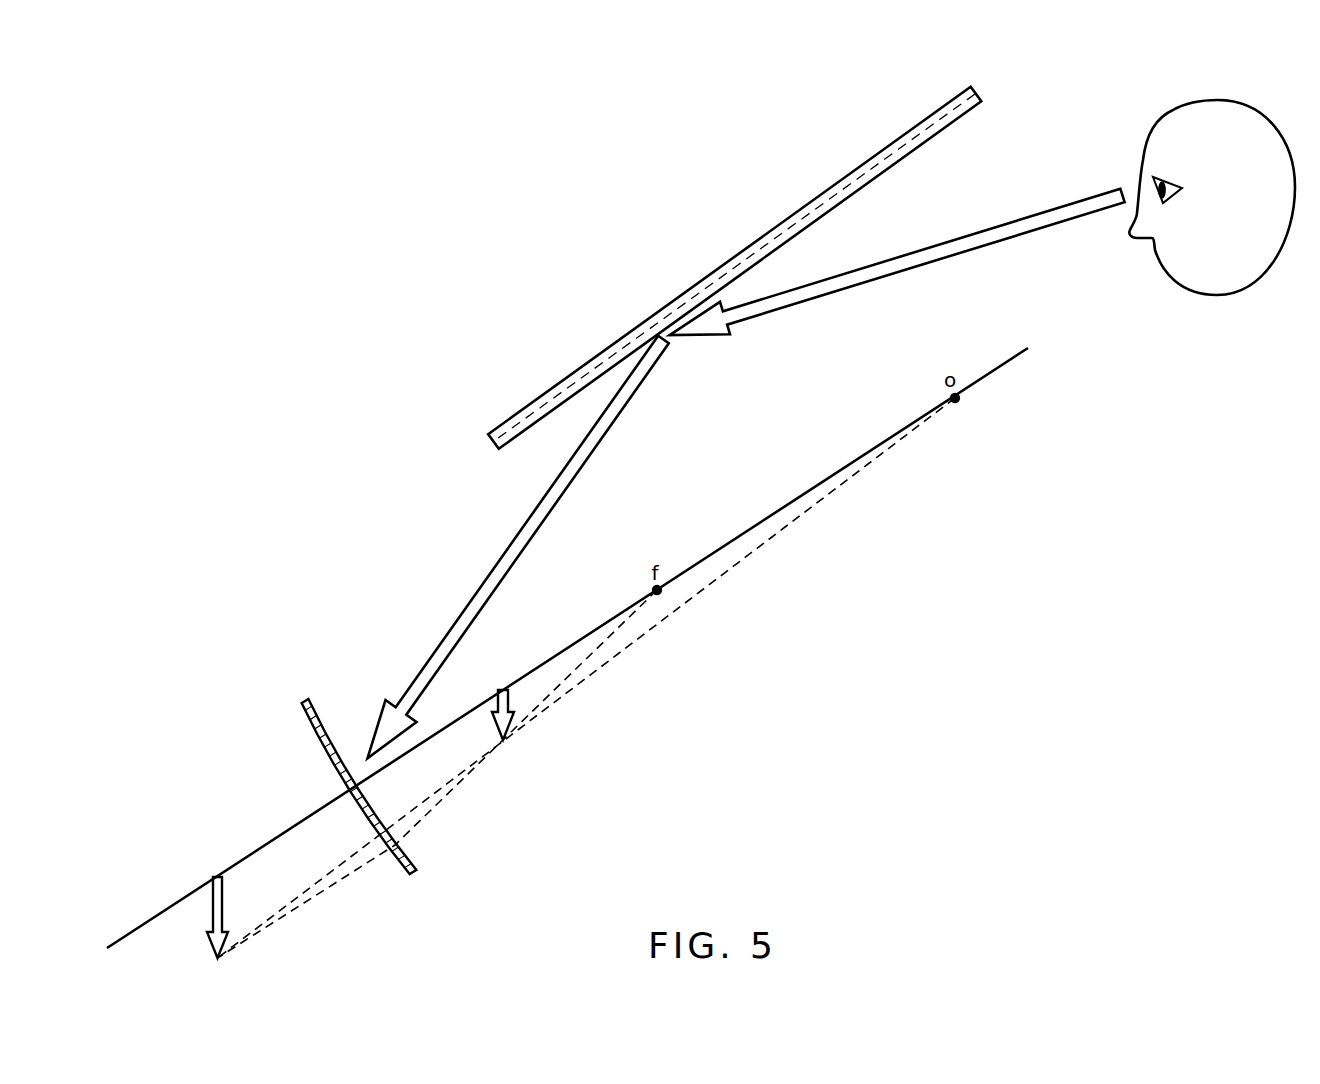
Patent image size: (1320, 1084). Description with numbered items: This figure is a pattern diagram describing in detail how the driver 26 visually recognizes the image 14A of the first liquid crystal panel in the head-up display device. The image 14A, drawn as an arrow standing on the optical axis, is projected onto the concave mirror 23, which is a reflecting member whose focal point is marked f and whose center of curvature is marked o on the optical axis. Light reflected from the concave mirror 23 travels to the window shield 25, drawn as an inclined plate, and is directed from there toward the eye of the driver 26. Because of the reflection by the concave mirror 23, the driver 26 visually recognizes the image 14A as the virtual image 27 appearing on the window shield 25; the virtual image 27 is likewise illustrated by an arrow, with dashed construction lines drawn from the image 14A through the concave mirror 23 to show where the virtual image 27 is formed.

The image of the first liquid crystal panel 14A is at (509, 700).
The concave mirror 23 is at (304, 714).
The window shield 25 is at (887, 142).
The driver 26 is at (1225, 98).
The virtual image 27 is at (223, 896).